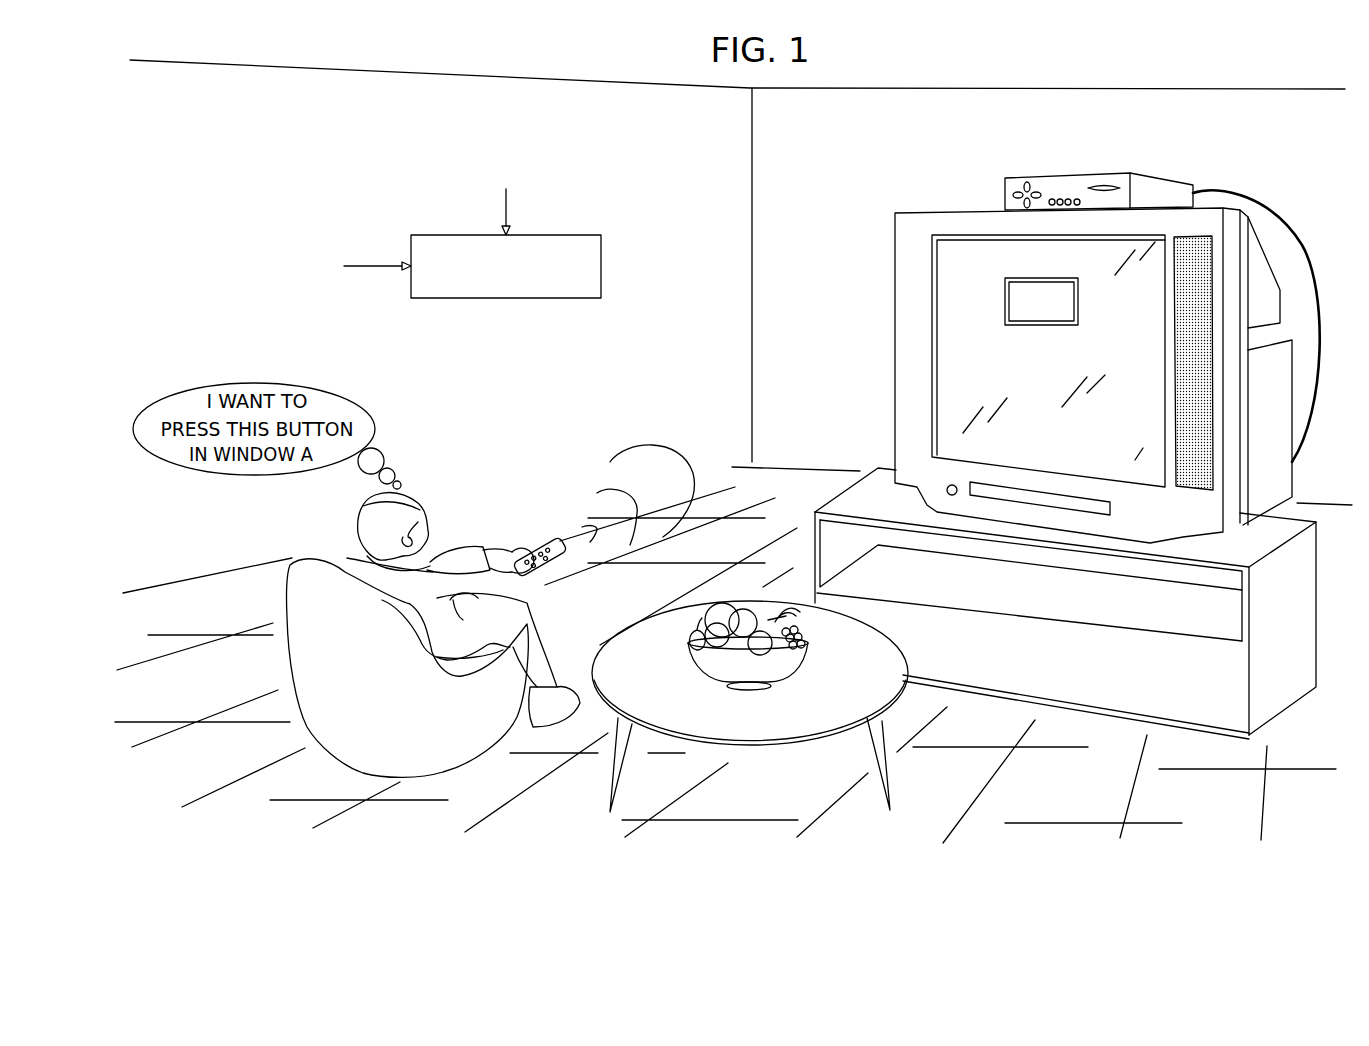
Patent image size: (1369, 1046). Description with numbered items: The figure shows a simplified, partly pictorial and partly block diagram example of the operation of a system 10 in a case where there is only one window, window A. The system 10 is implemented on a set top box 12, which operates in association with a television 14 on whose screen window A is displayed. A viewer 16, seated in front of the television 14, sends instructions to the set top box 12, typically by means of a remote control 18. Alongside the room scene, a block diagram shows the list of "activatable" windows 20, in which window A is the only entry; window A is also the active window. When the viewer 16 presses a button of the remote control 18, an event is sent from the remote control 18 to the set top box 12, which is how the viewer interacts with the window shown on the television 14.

The system 10 is at (1212, 165).
The set top box 12 is at (1117, 178).
The television 14 is at (933, 225).
The viewer 16 is at (370, 518).
The remote control 18 is at (548, 538).
The list of "activatable" windows 20 is at (366, 189).